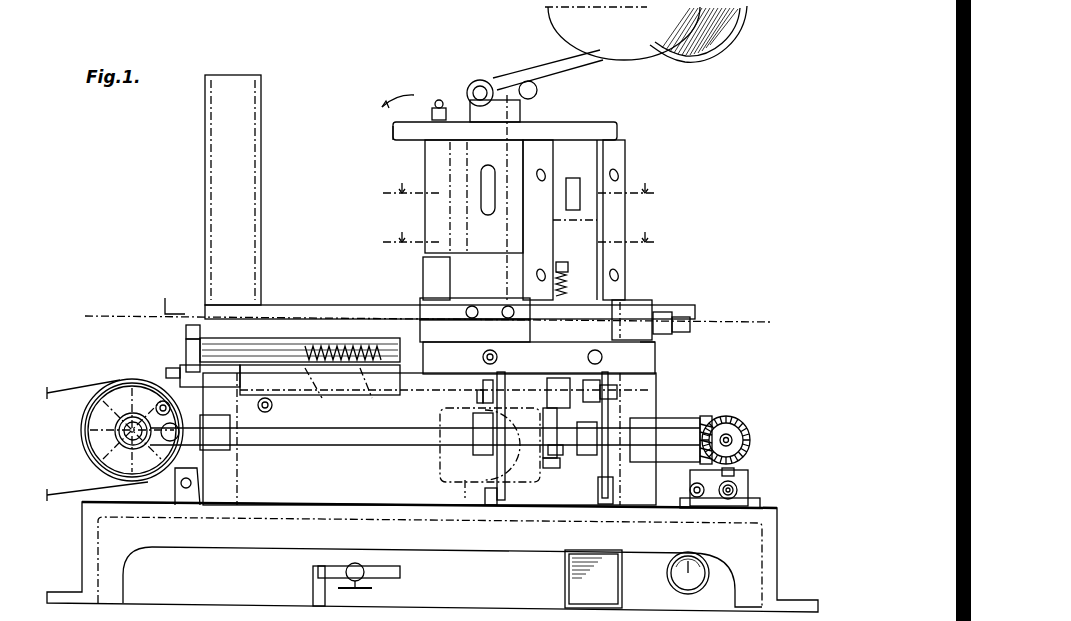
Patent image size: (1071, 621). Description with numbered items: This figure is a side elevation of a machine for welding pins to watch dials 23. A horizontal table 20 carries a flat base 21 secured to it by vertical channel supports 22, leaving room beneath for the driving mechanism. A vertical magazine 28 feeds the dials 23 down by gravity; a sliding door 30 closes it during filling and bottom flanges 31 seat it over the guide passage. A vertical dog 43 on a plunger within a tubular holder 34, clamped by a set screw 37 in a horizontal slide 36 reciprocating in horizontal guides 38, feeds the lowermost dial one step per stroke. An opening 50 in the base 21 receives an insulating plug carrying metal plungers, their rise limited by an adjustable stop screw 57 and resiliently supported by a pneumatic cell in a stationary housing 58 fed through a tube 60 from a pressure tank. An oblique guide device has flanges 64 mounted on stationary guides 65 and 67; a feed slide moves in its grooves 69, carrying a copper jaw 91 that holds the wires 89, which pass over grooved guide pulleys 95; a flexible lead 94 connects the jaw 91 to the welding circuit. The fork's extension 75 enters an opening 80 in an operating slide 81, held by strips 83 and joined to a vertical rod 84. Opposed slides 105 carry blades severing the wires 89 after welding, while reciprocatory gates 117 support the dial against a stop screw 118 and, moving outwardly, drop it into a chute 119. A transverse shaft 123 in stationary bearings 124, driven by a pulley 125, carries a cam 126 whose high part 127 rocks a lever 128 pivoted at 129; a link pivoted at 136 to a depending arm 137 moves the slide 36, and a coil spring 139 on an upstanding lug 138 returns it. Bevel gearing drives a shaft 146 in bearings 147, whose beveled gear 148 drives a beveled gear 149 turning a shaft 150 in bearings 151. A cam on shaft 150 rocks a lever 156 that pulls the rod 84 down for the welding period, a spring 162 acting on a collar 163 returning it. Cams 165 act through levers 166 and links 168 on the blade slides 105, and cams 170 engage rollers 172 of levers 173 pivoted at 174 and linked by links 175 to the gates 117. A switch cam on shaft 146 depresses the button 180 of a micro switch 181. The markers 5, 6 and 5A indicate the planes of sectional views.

The horizontal table 20 is at (80, 542).
The horizontal flat base 21 is at (635, 358).
The vertical channel supports 22 is at (656, 412).
The dials 23 is at (348, 318).
The vertical magazine 28 is at (205, 172).
The sliding door 30 is at (156, 301).
The outwardly projecting flanges 31 is at (262, 338).
The tubular holder 34 is at (196, 338).
The horizontal slide 36 is at (180, 366).
The set screw 37 is at (166, 371).
The horizontal guides 38 is at (320, 396).
The vertical dog 43 is at (186, 328).
The opening 50 is at (460, 350).
The section line 5A is at (517, 349).
The adjustable stop screw 57 is at (455, 452).
The stationary housing 58 is at (438, 470).
The tube 60 is at (563, 125).
The flanges 64 is at (423, 272).
The stationary guide 65 is at (420, 300).
The stationary guide 67 is at (632, 302).
The grooves 69 is at (424, 152).
The tail or extension 75 is at (575, 233).
The opening 80 is at (573, 210).
The operating slide 81 is at (604, 170).
The strips 83 is at (590, 178).
The vertical rod 84 is at (582, 358).
The wires 89 is at (540, 72).
The jaw 91 is at (392, 128).
The flexible lead 94 is at (414, 96).
The grooved guide pulleys 95 is at (505, 80).
The opposed slides 105 is at (435, 322).
The reciprocatory gates 117 is at (650, 341).
The stop screw 118 is at (684, 313).
The chute 119 is at (565, 592).
The transverse shaft 123 is at (115, 420).
The stationary bearings 124 is at (100, 458).
The pulley 125 is at (115, 440).
The cam 126 is at (115, 432).
The high part 127 is at (130, 384).
The vertically swinging lever 128 is at (205, 472).
The pivot 129 is at (200, 486).
The pivotal connection 136 is at (285, 414).
The depending arm 137 is at (272, 405).
The upstanding lug 138 is at (331, 389).
The compressible coil spring 139 is at (379, 389).
The shaft 146 is at (732, 438).
The bearings 147 is at (748, 492).
The beveled gear 148 is at (735, 418).
The beveled gear 149 is at (706, 416).
The shaft 150 is at (425, 446).
The bearings 151 is at (230, 448).
The lever 156 is at (505, 396).
The spring 162 is at (566, 272).
The collar 163 is at (574, 259).
The cams 165 is at (476, 420).
The levers 166 is at (500, 410).
The links 168 is at (463, 400).
The cams 170 is at (567, 460).
The rollers 172 is at (556, 440).
The levers 173 is at (612, 398).
The pivot 174 is at (613, 490).
The links 175 is at (606, 388).
The button 180 is at (736, 470).
The switch 181 is at (740, 484).
The section line 5 is at (519, 177).
The section line 6 is at (519, 226).